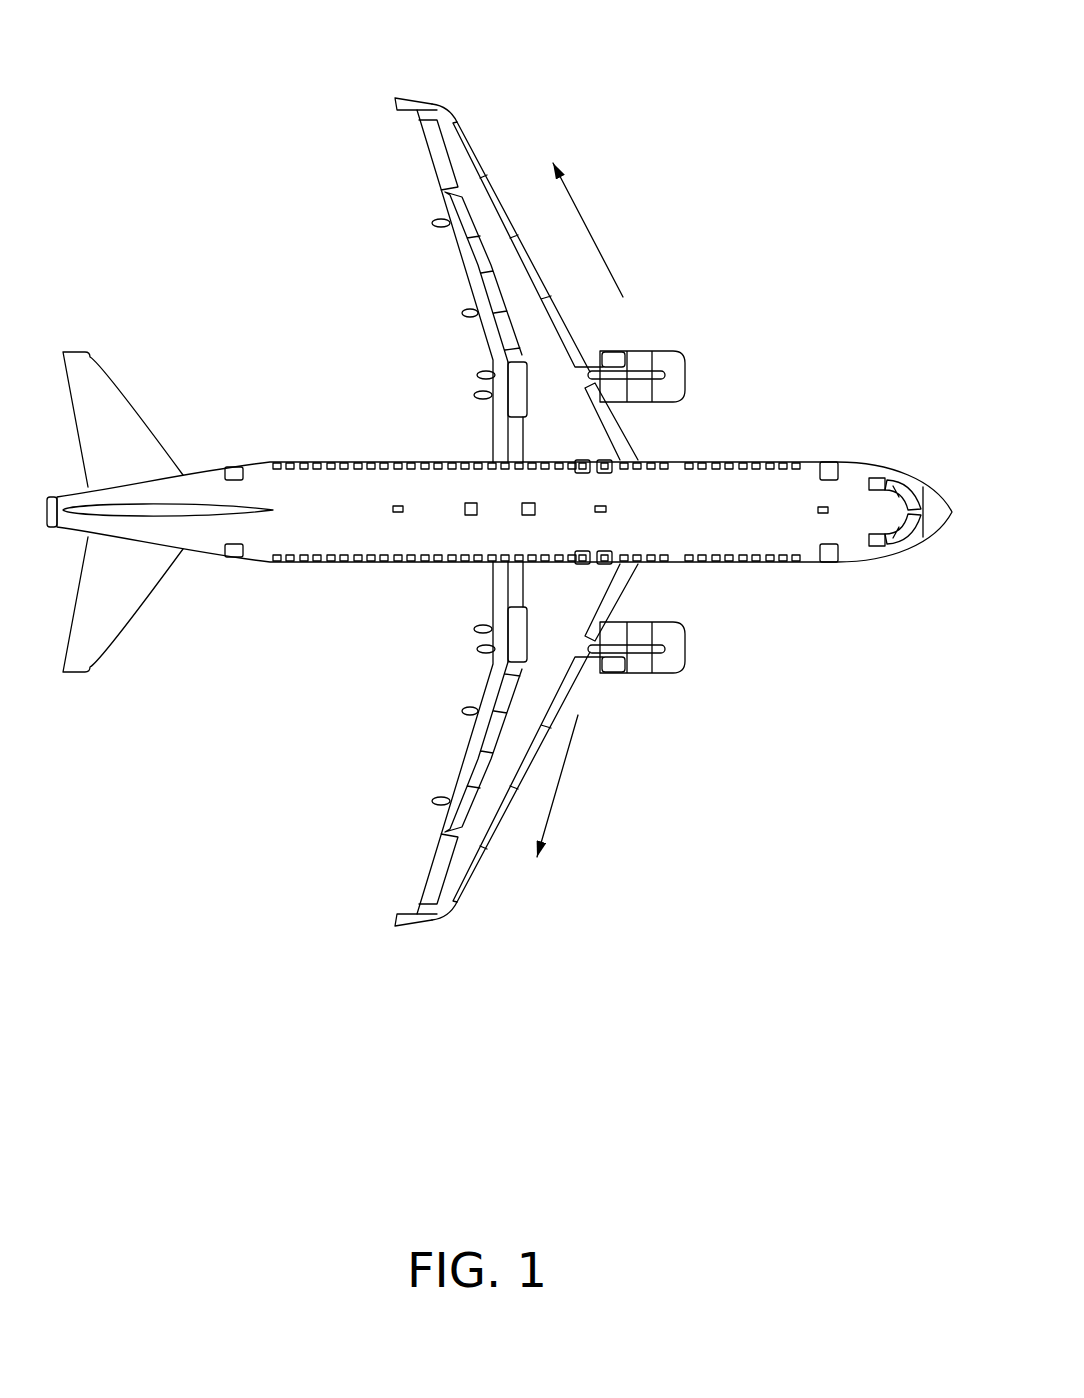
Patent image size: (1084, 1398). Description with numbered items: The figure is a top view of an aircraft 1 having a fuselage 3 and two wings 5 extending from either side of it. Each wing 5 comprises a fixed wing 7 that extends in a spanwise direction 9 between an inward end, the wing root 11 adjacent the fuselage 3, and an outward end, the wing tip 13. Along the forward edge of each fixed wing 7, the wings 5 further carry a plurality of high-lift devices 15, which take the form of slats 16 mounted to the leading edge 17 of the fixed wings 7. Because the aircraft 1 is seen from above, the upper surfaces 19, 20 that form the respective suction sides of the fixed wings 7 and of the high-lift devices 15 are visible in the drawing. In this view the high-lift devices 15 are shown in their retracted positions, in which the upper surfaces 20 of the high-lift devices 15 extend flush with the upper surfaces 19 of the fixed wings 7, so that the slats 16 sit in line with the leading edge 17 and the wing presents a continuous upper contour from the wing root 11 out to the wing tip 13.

The aircraft 1 is at (260, 192).
The fuselage 3 is at (334, 528).
The wing 5 is at (452, 297).
The fixed wing 7 is at (543, 352).
The spanwise direction 9 is at (597, 246).
The wing root 11 is at (556, 437).
The wing tip 13 is at (409, 93).
The high-lift device 15 is at (497, 203).
The slat 16 is at (527, 265).
The leading edge 17 is at (456, 93).
The upper surface of the fixed wing 19 is at (572, 413).
The upper surface of the high-lift device 20 is at (615, 435).